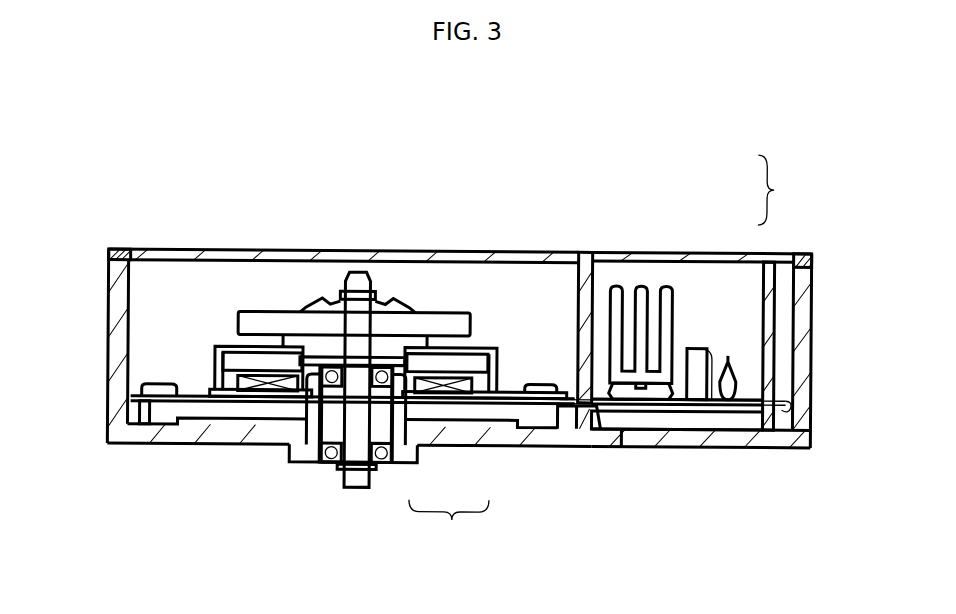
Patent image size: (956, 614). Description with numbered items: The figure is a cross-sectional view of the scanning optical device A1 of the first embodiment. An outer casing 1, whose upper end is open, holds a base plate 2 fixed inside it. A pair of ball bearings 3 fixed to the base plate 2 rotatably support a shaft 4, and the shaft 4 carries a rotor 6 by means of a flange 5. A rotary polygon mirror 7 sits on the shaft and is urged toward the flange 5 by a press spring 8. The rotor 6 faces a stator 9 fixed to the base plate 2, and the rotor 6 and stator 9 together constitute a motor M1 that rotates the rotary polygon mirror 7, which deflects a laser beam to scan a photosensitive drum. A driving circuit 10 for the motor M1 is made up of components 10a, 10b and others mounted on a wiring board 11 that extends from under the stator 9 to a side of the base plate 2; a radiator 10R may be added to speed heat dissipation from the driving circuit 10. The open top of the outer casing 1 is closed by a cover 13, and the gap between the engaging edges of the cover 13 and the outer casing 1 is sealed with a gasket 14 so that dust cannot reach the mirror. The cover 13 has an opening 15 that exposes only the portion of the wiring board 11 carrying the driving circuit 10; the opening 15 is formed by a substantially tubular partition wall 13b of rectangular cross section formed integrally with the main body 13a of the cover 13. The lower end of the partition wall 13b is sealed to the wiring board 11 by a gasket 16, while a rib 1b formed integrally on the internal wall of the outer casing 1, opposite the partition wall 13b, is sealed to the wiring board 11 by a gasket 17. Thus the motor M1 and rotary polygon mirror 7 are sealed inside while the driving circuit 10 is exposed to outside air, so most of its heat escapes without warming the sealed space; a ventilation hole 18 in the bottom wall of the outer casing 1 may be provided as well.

The outer casing 1 is at (192, 432).
The rib 1b is at (758, 428).
The base plate 2 is at (157, 417).
The ball bearings 3 is at (315, 401).
The shaft 4 is at (355, 481).
The flange 5 is at (424, 340).
The rotor 6 is at (477, 370).
The rotary polygon mirror 7 is at (418, 348).
The press spring 8 is at (322, 296).
The stator 9 is at (437, 396).
The driving circuit 10 is at (783, 190).
The component 10a is at (697, 347).
The component 10b is at (728, 358).
The radiator 10R is at (617, 286).
The wiring board 11 is at (567, 406).
The cover 13 is at (330, 247).
The main body 13a is at (153, 251).
The partition wall 13b is at (575, 262).
The gasket 14 is at (116, 259).
The opening 15 is at (660, 246).
The gasket 16 is at (790, 399).
The gasket 17 is at (776, 402).
The ventilation hole 18 is at (660, 429).
The scanning optical device A1 is at (365, 247).
The motor M1 is at (449, 528).